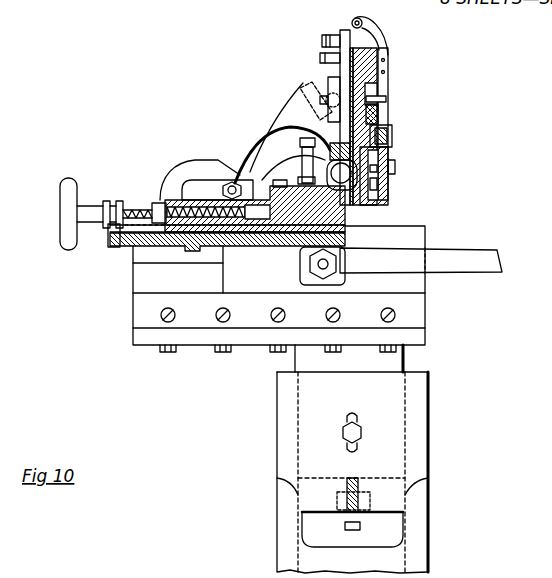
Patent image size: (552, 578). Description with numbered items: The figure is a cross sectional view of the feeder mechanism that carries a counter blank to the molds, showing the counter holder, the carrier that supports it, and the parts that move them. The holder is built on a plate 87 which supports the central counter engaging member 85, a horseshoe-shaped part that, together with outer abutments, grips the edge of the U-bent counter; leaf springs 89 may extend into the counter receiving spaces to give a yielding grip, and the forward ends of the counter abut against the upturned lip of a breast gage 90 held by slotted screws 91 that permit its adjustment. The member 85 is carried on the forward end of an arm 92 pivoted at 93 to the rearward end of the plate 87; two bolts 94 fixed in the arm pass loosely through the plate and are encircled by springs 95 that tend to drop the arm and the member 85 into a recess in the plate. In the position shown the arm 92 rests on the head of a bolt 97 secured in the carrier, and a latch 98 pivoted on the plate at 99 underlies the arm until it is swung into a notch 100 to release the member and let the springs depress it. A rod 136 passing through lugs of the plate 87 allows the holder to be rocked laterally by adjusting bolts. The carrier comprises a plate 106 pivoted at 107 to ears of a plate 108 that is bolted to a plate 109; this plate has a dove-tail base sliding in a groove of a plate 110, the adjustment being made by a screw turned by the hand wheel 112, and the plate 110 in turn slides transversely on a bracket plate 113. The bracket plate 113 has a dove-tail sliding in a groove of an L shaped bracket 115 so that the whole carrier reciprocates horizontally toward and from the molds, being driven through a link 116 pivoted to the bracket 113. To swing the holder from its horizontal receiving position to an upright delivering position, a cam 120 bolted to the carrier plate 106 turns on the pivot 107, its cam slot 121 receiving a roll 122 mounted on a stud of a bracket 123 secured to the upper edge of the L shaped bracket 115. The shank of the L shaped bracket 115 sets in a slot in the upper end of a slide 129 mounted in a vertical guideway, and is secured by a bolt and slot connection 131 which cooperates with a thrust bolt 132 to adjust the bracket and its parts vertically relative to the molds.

The central counter engaging member 85 is at (378, 85).
The plate 87 is at (388, 50).
The leaf springs 89 is at (389, 62).
The breast gage 90 is at (390, 153).
The screws 91 is at (392, 163).
The arm 92 is at (389, 110).
The pivot 93 is at (363, 22).
The bolts 94 is at (388, 99).
The springs 95 is at (327, 96).
The bolt 97 is at (306, 152).
The latch 98 is at (390, 172).
The pivot 99 is at (386, 186).
The notch 100 is at (392, 131).
The carrier plate 106 is at (325, 40).
The pivot 107 is at (341, 177).
The plate 108 is at (250, 183).
The plate 109 is at (168, 204).
The plate 110 is at (231, 247).
The hand wheel 112 is at (62, 198).
The bracket plate 113 is at (287, 247).
The L shaped bracket 115 is at (140, 339).
The link 116 is at (494, 253).
The cam 120 is at (266, 118).
The cam slot 121 is at (262, 152).
The roll 122 is at (207, 183).
The bracket 123 is at (165, 196).
The slide 129 is at (429, 558).
The bolt and slot connection 131 is at (358, 432).
The thrust bolt 132 is at (361, 526).
The rod 136 is at (341, 33).